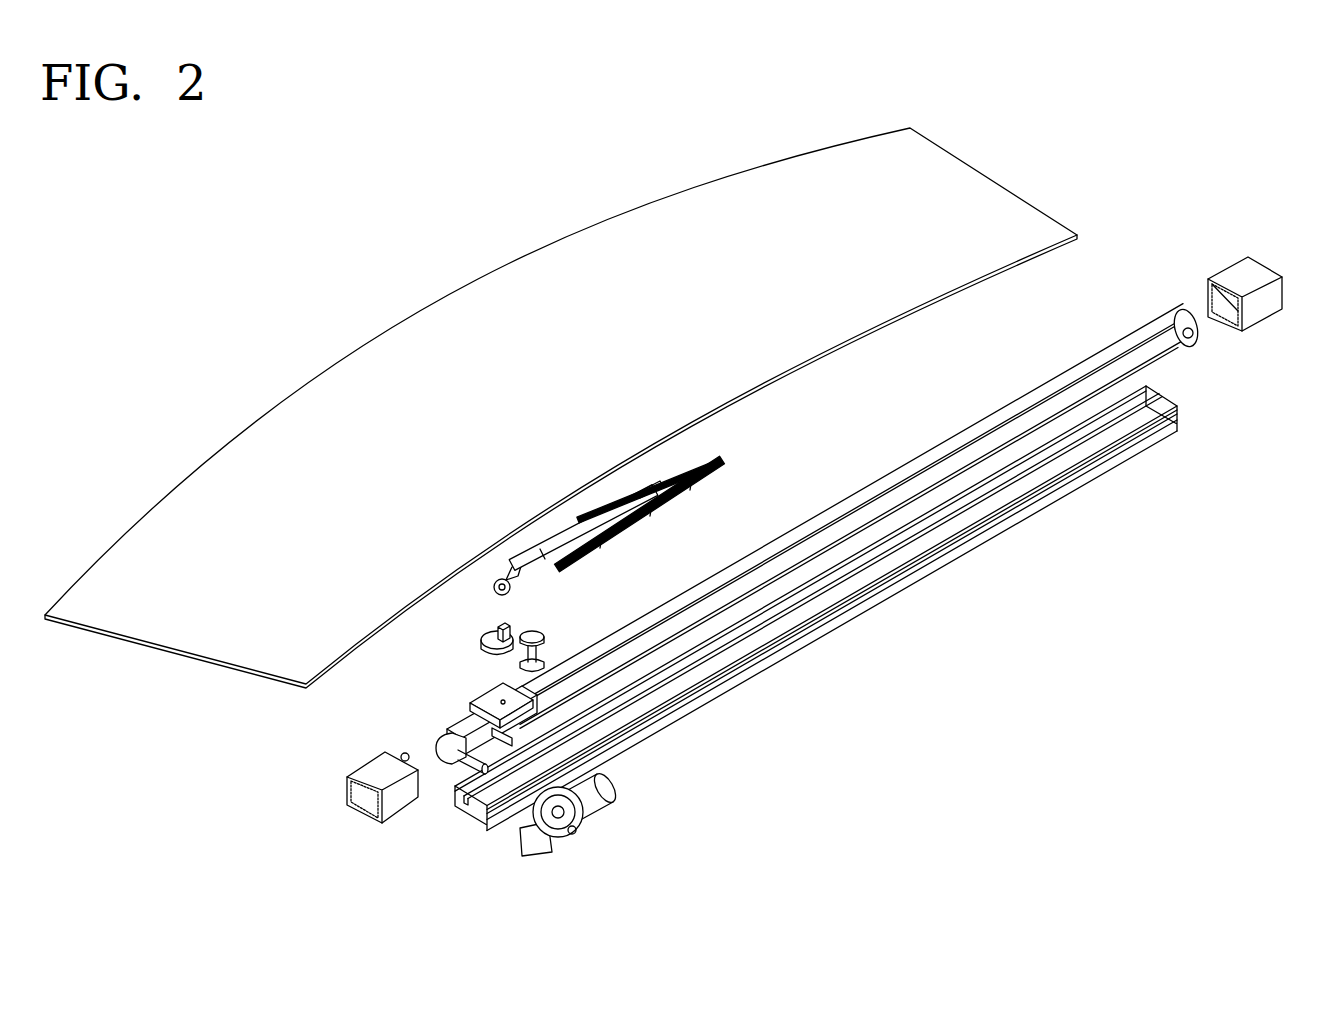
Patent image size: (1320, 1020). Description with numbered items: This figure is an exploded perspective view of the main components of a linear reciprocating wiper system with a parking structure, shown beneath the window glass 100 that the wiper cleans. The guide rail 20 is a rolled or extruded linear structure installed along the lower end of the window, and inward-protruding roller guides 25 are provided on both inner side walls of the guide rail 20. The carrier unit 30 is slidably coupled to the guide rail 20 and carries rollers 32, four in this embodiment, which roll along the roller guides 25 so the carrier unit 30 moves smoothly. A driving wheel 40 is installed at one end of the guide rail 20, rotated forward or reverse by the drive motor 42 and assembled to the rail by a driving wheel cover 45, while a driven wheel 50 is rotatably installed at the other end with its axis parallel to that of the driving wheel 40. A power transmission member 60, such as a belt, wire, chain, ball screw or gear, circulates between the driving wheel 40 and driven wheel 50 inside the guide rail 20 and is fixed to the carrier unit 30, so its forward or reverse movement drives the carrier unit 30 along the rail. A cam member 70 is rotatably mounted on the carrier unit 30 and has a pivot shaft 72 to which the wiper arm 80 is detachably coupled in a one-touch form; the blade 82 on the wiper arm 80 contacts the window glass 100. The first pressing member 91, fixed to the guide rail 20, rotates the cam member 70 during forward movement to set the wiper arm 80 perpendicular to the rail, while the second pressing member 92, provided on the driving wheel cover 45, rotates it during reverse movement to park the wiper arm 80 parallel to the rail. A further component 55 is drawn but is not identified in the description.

The window glass 100 is at (403, 347).
The guide rail 20 is at (1140, 452).
The roller guide 25 is at (477, 826).
The carrier unit 30 is at (487, 700).
The roller 32 is at (500, 733).
The driving wheel 40 is at (460, 762).
The drive motor 42 is at (597, 807).
The driving wheel cover 45 is at (365, 771).
The driven wheel 50 is at (1190, 340).
The end cap 55 is at (1258, 270).
The power transmission member 60 is at (463, 723).
The cam member 70 is at (487, 632).
The pivot shaft 72 is at (507, 627).
The wiper arm 80 is at (530, 548).
The blade 82 is at (648, 512).
The first pressing member 91 is at (537, 641).
The second pressing member 92 is at (404, 753).